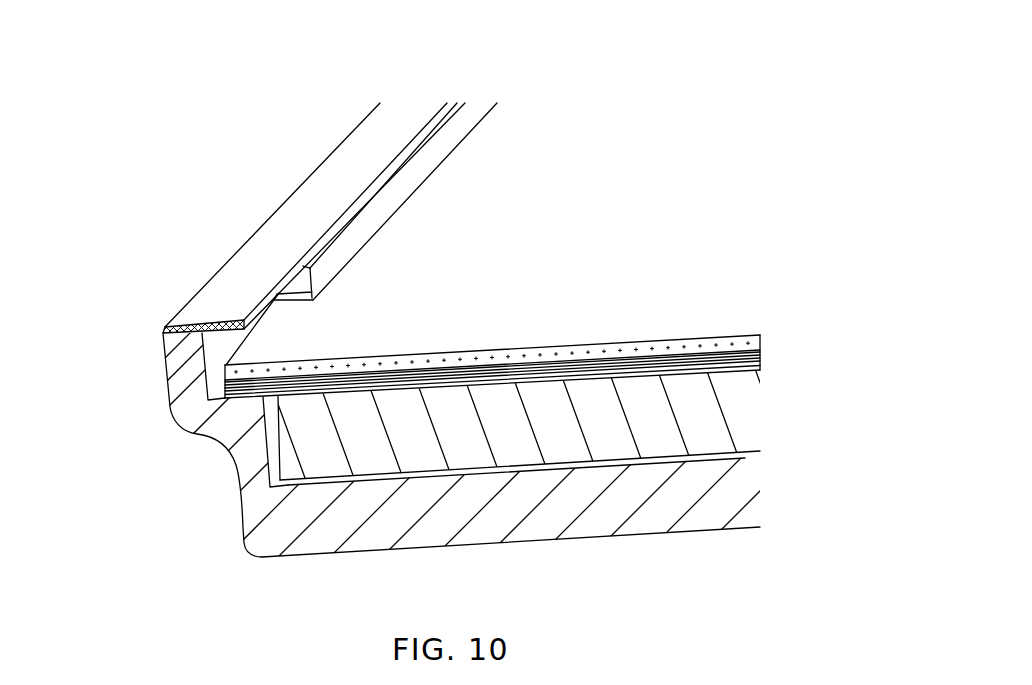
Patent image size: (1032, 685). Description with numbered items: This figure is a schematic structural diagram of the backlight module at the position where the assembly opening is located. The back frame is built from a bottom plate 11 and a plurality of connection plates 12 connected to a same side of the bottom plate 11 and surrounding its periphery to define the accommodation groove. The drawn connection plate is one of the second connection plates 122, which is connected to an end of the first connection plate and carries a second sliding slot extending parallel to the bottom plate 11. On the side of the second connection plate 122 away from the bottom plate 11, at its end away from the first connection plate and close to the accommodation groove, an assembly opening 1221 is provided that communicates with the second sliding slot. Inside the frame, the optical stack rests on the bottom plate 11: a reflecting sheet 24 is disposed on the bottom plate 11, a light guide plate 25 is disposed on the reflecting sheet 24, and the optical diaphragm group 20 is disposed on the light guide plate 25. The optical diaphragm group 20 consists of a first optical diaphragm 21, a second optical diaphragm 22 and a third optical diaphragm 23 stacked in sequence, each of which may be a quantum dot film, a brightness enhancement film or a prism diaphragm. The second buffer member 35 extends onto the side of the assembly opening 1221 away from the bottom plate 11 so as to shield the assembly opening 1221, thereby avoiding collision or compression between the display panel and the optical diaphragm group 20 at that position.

The bottom plate 11 is at (518, 512).
The connection plate 12 is at (380, 443).
The second connection plate 122 is at (250, 452).
The assembly opening 1221 is at (228, 348).
The optical diaphragm group 20 is at (571, 296).
The first optical diaphragm 21 is at (762, 363).
The second optical diaphragm 22 is at (762, 337).
The third optical diaphragm 23 is at (712, 340).
The reflecting sheet 24 is at (745, 458).
The light guide plate 25 is at (718, 407).
The second buffer member 35 is at (233, 299).